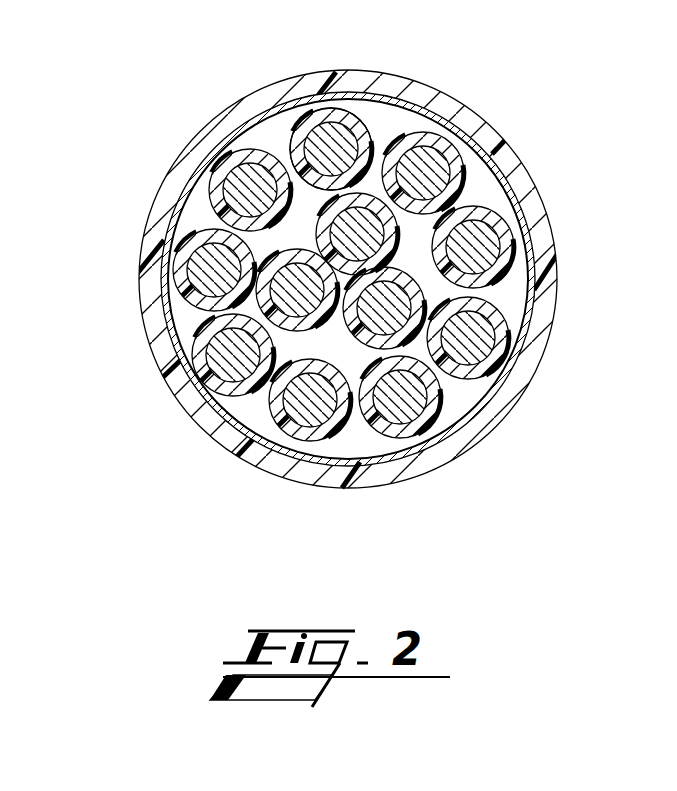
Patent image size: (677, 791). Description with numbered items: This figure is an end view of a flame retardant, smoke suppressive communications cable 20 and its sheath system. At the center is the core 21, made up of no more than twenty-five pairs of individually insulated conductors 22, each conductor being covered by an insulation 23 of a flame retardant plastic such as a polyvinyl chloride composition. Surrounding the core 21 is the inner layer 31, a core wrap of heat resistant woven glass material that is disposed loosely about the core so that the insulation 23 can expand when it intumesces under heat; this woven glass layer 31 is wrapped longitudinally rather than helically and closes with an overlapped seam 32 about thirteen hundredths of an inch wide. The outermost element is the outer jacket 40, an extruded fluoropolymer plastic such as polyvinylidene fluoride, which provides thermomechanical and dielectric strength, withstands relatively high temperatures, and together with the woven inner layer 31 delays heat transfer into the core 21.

The communications cable 20 is at (196, 469).
The core 21 is at (477, 183).
The insulated conductor 22 is at (210, 232).
The insulation 23 is at (363, 45).
The inner layer 31 is at (400, 86).
The overlapped seam 32 is at (350, 465).
The outer jacket 40 is at (175, 382).